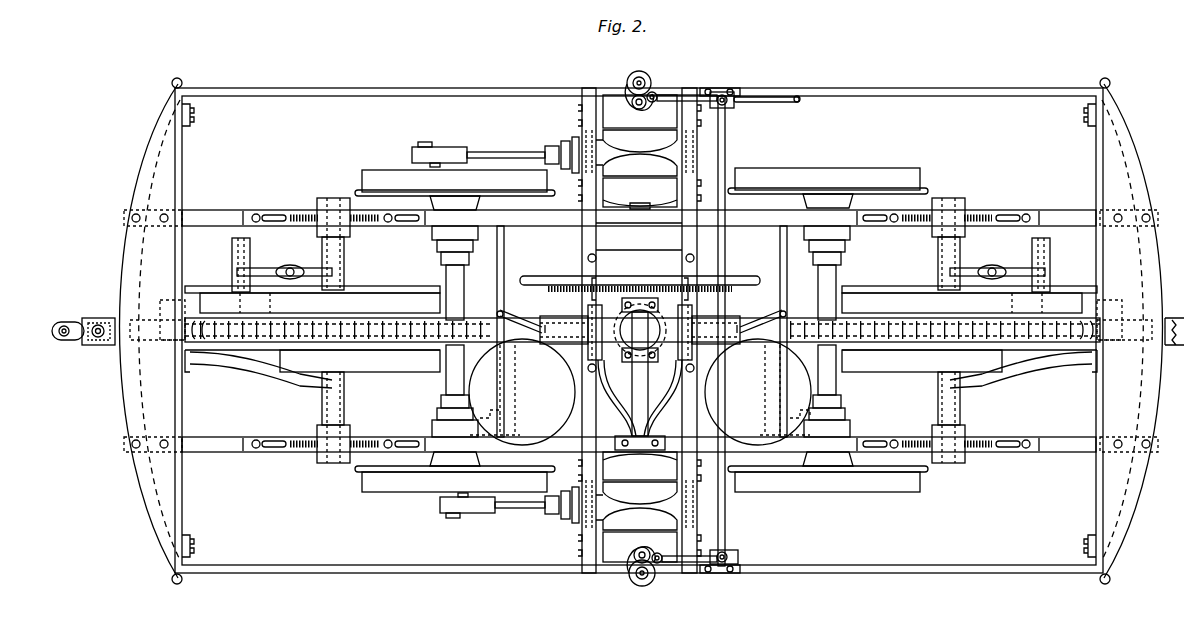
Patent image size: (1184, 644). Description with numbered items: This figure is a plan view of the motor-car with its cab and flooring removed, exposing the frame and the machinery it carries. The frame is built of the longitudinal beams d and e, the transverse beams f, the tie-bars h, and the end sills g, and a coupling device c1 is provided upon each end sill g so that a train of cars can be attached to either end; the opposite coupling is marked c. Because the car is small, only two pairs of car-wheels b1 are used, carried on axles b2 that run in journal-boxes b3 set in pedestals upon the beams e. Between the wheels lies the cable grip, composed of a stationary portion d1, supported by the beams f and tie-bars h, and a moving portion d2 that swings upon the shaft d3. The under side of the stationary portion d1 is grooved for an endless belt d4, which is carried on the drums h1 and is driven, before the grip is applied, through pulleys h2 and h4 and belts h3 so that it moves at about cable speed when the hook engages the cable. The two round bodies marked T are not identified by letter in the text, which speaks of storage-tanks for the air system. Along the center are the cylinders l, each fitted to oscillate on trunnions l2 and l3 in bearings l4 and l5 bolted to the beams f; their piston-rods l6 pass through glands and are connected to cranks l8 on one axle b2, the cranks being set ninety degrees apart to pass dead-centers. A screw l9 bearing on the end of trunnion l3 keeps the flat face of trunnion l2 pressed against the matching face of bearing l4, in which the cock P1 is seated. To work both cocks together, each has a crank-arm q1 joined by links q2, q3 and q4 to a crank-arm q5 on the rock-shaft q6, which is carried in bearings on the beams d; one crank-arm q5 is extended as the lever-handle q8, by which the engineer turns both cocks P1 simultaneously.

The longitudinal beam d is at (370, 92).
The end sill g is at (641, 331).
The coupling device c1 is at (83, 319).
The coupler c is at (1174, 319).
The longitudinal beam e is at (641, 330).
The car-wheel b1 is at (641, 330).
The journal-box b3 is at (432, 230).
The axle b2 is at (641, 330).
The tie-bar h is at (642, 331).
The drum h1 is at (420, 320).
The belt h3 is at (892, 300).
The pulley h4 is at (398, 290).
The pulley h2 is at (238, 292).
The endless belt d4 is at (436, 334).
The transverse beam f is at (582, 232).
The bearing l5 is at (640, 287).
The trunnion l2 is at (640, 330).
The trunnion l3 is at (640, 329).
The bearing l4 is at (640, 370).
The cylinder l is at (600, 330).
The screw l9 is at (636, 208).
The cock P1 is at (630, 78).
The crank-arm q1 is at (646, 96).
The link q2 is at (657, 95).
The link q3 is at (697, 92).
The link q4 is at (724, 92).
The crank-arm q5 is at (742, 556).
The rock-shaft q6 is at (726, 128).
The lever-handle q8 is at (766, 104).
The crank l8 is at (412, 168).
The piston-rod l6 is at (520, 152).
The stationary portion of the grip d1 is at (636, 310).
The moving portion of the grip d2 is at (526, 320).
The shaft d3 is at (745, 318).
The tank T is at (640, 392).